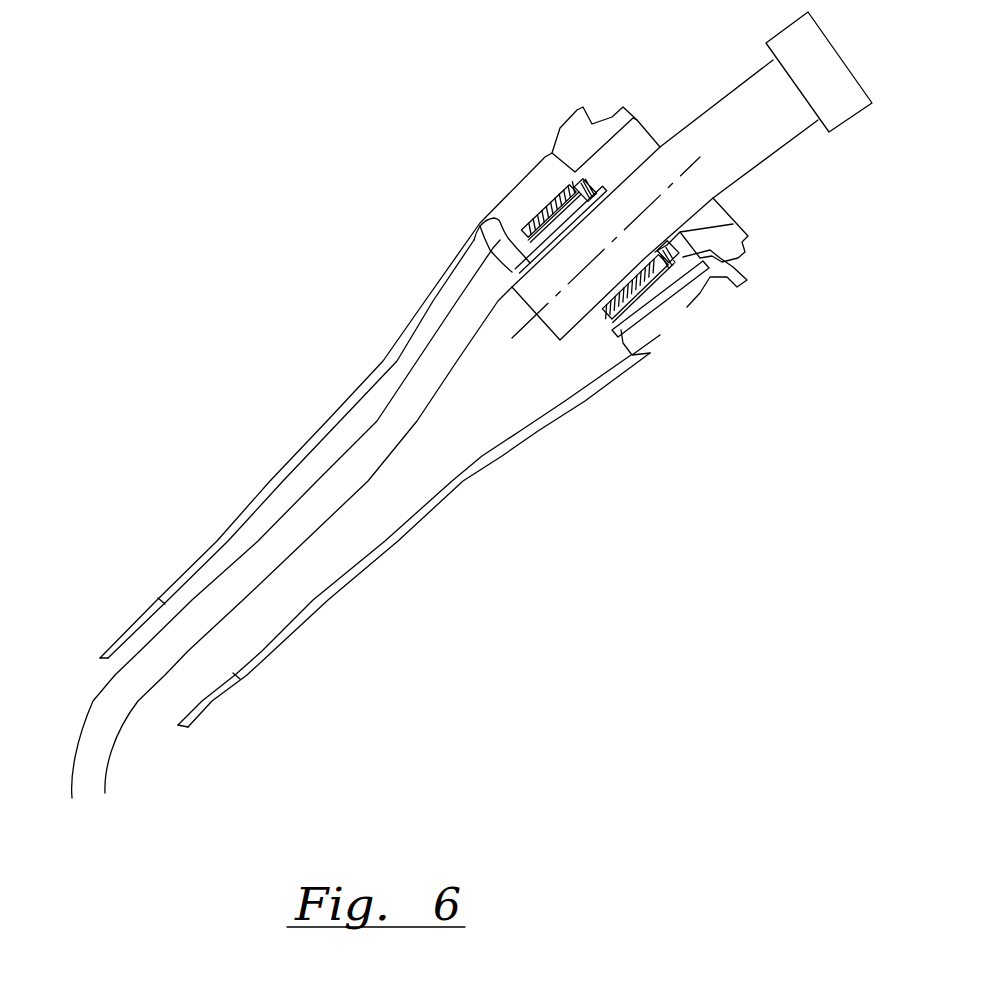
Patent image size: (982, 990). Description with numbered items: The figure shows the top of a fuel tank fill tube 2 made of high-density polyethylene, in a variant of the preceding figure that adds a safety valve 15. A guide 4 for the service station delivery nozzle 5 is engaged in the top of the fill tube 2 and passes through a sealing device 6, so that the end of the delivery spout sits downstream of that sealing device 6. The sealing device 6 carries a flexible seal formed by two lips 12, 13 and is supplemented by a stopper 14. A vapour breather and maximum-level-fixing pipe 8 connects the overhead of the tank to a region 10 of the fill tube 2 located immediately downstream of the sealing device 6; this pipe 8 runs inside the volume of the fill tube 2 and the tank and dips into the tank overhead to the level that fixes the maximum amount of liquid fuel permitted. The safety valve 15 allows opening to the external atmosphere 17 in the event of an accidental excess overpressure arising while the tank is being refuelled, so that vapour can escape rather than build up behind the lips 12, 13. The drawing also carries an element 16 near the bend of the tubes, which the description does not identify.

The fill tube 2 is at (190, 723).
The guide 4 is at (727, 232).
The service station delivery nozzle 5 is at (762, 126).
The sealing device 6 is at (688, 298).
The vapour breather/maximum-level-fixing pipe 8 is at (247, 572).
The region 10 is at (497, 227).
The flexible lip 12 is at (578, 160).
The flexible lip 13 is at (550, 207).
The stopper 14 is at (497, 218).
The safety valve 15 is at (617, 107).
The bend 16 is at (157, 712).
The external atmosphere 17 is at (660, 125).